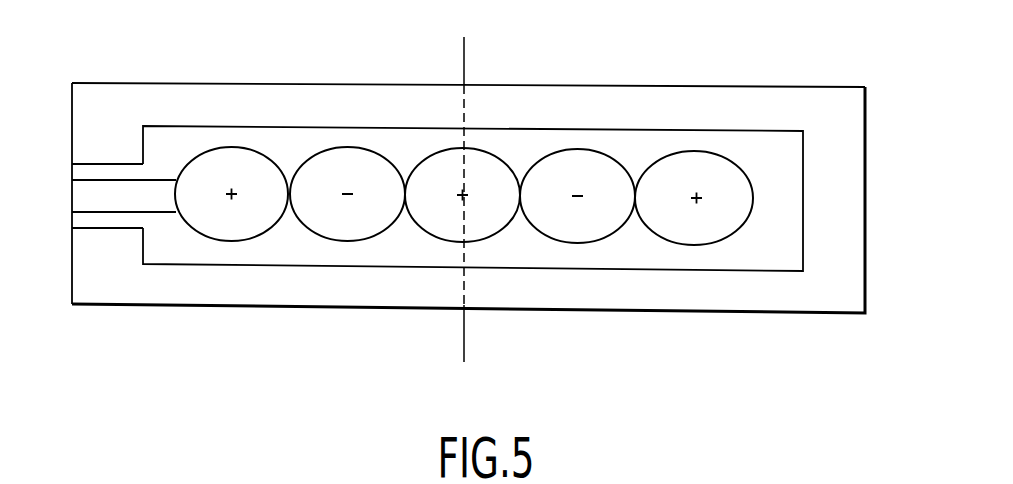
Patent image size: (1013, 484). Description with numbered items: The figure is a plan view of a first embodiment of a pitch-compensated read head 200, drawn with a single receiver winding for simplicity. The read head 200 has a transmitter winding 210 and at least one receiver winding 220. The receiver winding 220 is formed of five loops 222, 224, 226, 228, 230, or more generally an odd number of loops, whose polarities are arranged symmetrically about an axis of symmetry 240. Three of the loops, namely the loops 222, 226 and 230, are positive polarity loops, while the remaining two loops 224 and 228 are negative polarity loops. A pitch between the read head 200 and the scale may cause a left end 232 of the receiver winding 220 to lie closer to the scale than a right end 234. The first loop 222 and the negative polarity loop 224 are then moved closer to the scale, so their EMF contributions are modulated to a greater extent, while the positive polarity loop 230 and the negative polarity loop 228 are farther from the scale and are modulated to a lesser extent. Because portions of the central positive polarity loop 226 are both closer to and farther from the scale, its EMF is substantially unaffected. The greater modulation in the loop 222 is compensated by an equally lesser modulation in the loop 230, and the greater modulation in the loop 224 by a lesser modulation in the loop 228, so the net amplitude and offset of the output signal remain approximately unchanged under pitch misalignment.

The read head 200 is at (592, 76).
The transmitter winding 210 is at (698, 126).
The receiver winding 220 is at (464, 194).
The first loop 222 is at (238, 241).
The negative polarity loop 224 is at (372, 237).
The positive polarity loop 226 is at (504, 232).
The negative polarity loop 228 is at (612, 233).
The positive polarity loop 230 is at (741, 228).
The left end 232 is at (173, 149).
The right end 234 is at (764, 184).
The axis of symmetry 240 is at (465, 52).